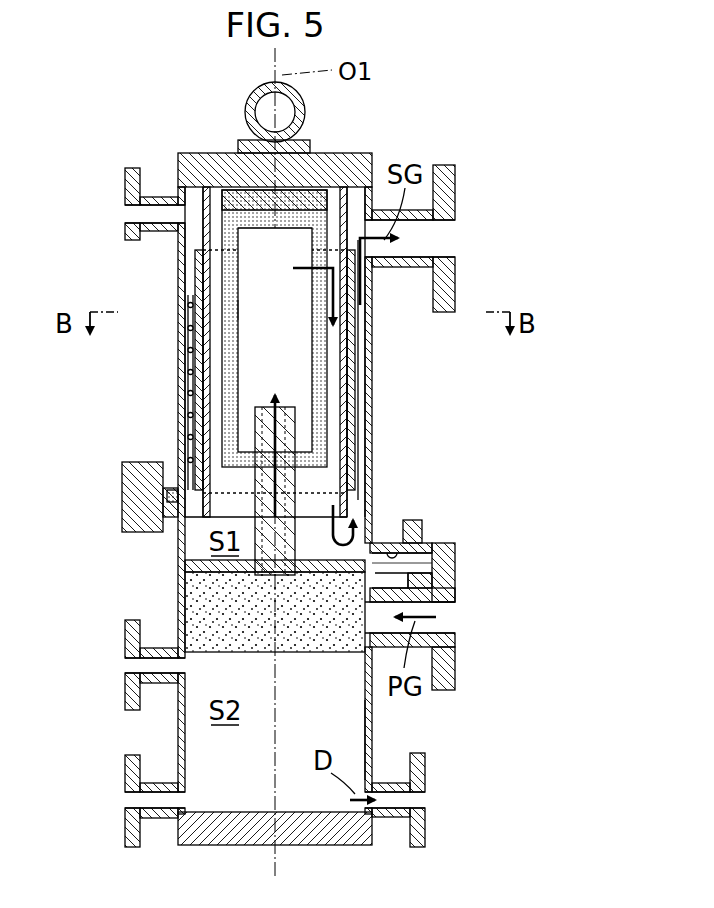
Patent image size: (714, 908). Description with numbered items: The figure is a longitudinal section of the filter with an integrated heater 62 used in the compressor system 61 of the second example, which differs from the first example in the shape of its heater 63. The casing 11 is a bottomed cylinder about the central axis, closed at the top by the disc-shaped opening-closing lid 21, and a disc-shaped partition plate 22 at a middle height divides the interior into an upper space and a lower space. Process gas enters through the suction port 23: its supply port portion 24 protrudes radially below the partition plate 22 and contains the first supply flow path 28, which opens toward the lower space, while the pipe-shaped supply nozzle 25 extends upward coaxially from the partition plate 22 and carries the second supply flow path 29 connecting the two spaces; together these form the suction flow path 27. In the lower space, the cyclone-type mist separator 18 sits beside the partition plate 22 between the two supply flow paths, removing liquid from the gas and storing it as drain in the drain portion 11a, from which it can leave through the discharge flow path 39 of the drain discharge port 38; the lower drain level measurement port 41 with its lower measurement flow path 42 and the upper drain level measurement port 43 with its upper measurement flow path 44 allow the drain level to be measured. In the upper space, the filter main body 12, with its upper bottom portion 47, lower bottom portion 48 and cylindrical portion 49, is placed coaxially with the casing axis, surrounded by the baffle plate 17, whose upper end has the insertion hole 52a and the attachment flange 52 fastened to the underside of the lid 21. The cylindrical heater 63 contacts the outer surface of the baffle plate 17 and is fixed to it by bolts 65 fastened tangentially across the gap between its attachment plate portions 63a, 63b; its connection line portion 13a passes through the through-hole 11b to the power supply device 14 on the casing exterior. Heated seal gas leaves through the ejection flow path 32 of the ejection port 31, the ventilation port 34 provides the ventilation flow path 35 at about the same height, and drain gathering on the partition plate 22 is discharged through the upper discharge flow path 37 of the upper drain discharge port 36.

The casing 11 is at (372, 430).
The drain portion 11a is at (352, 733).
The through-hole 11b is at (165, 505).
The filter main body 12 is at (330, 372).
The connection line portion 13a is at (165, 482).
The power supply device 14 is at (122, 512).
The baffle plate 17 is at (232, 291).
The mist separator 18 is at (332, 632).
The opening-closing lid 21 is at (362, 170).
The partition plate 22 is at (355, 570).
The suction port 23 is at (541, 640).
The supply port portion 24 is at (445, 660).
The supply nozzle 25 is at (455, 692).
The suction flow path 27 is at (527, 548).
The first supply flow path 28 is at (432, 577).
The second supply flow path 29 is at (300, 583).
The ejection port 31 is at (456, 212).
The ejection flow path 32 is at (456, 250).
The ventilation port 34 is at (132, 205).
The ventilation flow path 35 is at (135, 213).
The upper drain discharge port 36 is at (424, 531).
The upper discharge flow path 37 is at (396, 555).
The drain discharge port 38 is at (418, 828).
The discharge flow path 39 is at (418, 798).
The lower drain level measurement port 41 is at (130, 830).
The lower measurement flow path 42 is at (130, 794).
The upper drain level measurement port 43 is at (132, 690).
The upper measurement flow path 44 is at (130, 655).
The upper bottom portion 47 is at (258, 218).
The lower bottom portion 48 is at (250, 456).
The cylindrical portion 49 is at (226, 312).
The attachment flange 52 is at (197, 192).
The insertion hole 52a is at (217, 193).
The compressor system 61 is at (602, 127).
The filter with an integrated heater 62 is at (474, 150).
The heater 63 is at (360, 400).
The attachment plate portion 63a is at (190, 372).
The attachment plate portion 63b is at (190, 393).
The bolts 65 is at (198, 332).